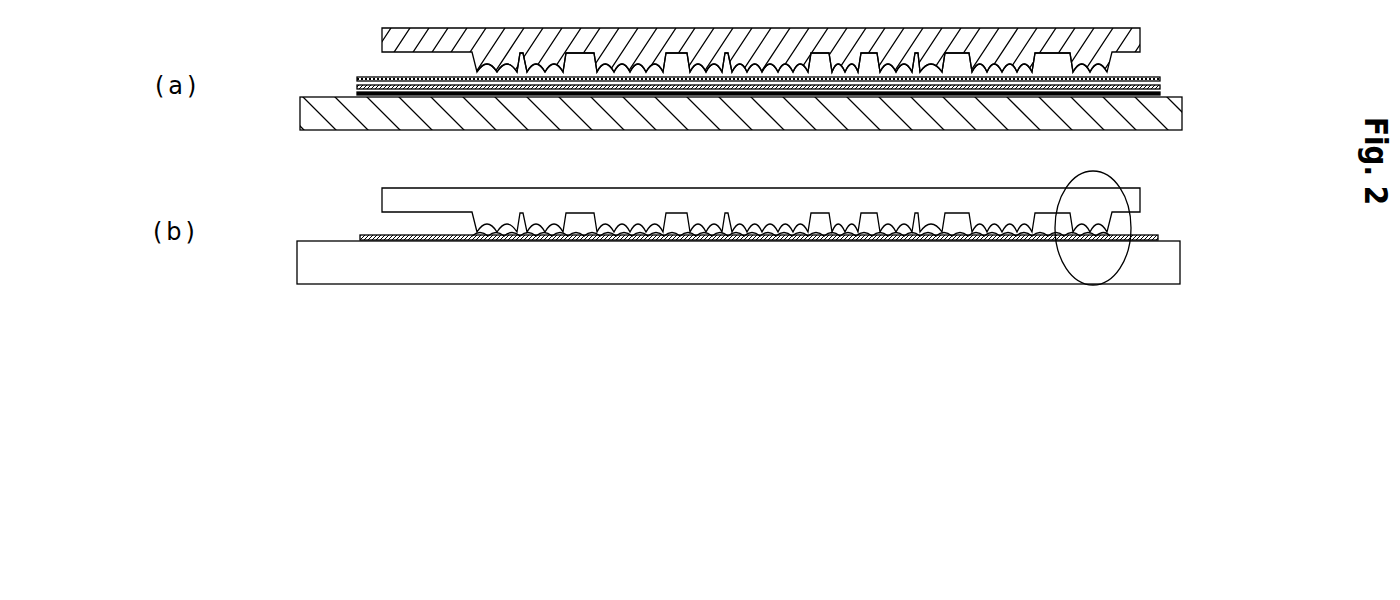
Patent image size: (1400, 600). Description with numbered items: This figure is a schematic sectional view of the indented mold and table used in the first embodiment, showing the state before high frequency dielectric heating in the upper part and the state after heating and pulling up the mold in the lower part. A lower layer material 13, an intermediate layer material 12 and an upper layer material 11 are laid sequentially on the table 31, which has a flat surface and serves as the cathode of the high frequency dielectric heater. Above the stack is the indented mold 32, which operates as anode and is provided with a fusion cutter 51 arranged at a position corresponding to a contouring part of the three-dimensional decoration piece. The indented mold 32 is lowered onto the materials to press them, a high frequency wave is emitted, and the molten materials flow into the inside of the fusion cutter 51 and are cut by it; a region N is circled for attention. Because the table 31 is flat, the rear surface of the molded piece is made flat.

The upper layer material 11 is at (1160, 78).
The intermediate layer material 12 is at (1160, 87).
The lower layer material 13 is at (1162, 94).
The table 31 is at (290, 107).
The indented mold 32 is at (372, 39).
The fusion cutter 51 is at (1110, 72).
The enlarged region N is at (1112, 174).